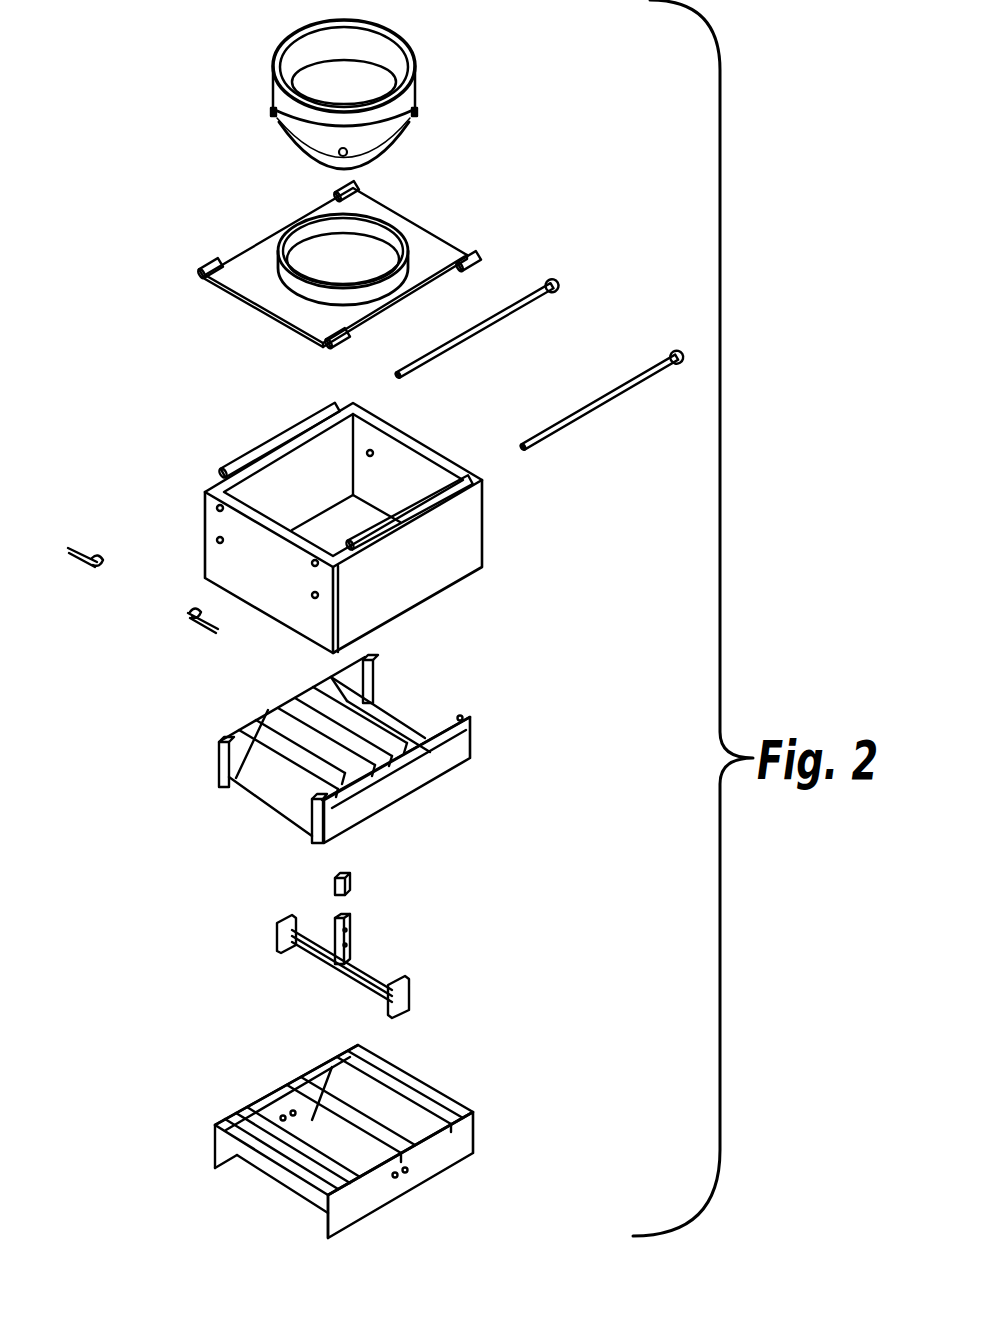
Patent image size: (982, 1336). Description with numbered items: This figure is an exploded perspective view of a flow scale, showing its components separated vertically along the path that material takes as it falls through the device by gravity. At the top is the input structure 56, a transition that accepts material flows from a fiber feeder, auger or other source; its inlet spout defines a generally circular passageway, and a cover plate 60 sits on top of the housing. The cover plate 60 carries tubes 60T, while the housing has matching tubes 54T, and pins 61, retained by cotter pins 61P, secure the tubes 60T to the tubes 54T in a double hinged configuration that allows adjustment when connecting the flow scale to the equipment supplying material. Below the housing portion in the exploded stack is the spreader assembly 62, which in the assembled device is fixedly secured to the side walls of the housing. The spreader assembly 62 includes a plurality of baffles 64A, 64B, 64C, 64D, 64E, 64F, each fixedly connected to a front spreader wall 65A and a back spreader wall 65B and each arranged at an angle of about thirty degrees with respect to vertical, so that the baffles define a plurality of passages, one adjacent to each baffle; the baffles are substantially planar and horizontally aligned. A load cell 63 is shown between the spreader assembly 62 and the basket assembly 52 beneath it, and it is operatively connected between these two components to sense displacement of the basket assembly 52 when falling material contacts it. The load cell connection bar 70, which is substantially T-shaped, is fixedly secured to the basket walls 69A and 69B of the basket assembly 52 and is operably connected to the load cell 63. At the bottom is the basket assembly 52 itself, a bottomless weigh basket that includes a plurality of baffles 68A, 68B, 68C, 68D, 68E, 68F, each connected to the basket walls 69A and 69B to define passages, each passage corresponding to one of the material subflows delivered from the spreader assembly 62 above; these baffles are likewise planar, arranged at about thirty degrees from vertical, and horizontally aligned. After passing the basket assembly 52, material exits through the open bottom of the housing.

The basket assembly 52 is at (368, 1165).
The tubes on the housing 54T is at (298, 434).
The input structure 56 is at (268, 149).
The cover plate 60 is at (304, 262).
The tubes on the cover plate 60T is at (212, 262).
The pins 61 is at (468, 340).
The cotter pins 61P is at (192, 619).
The spreader assembly 62 is at (347, 757).
The load cell 63 is at (350, 885).
The baffle 64A is at (238, 732).
The baffle 64B is at (262, 712).
The baffle 64C is at (303, 717).
The baffle 64D is at (340, 823).
The baffle 64E is at (392, 742).
The baffle 64F is at (410, 760).
The front spreader wall 65A is at (450, 752).
The back spreader wall 65B is at (378, 672).
The baffle 68A is at (280, 1175).
The baffle 68B is at (312, 1205).
The baffle 68C is at (345, 1170).
The baffle 68D is at (382, 1132).
The baffle 68E is at (390, 1128).
The baffle 68F is at (445, 1100).
The basket wall 69A is at (368, 1197).
The basket wall 69B is at (297, 1085).
The load cell connection bar 70 is at (330, 978).